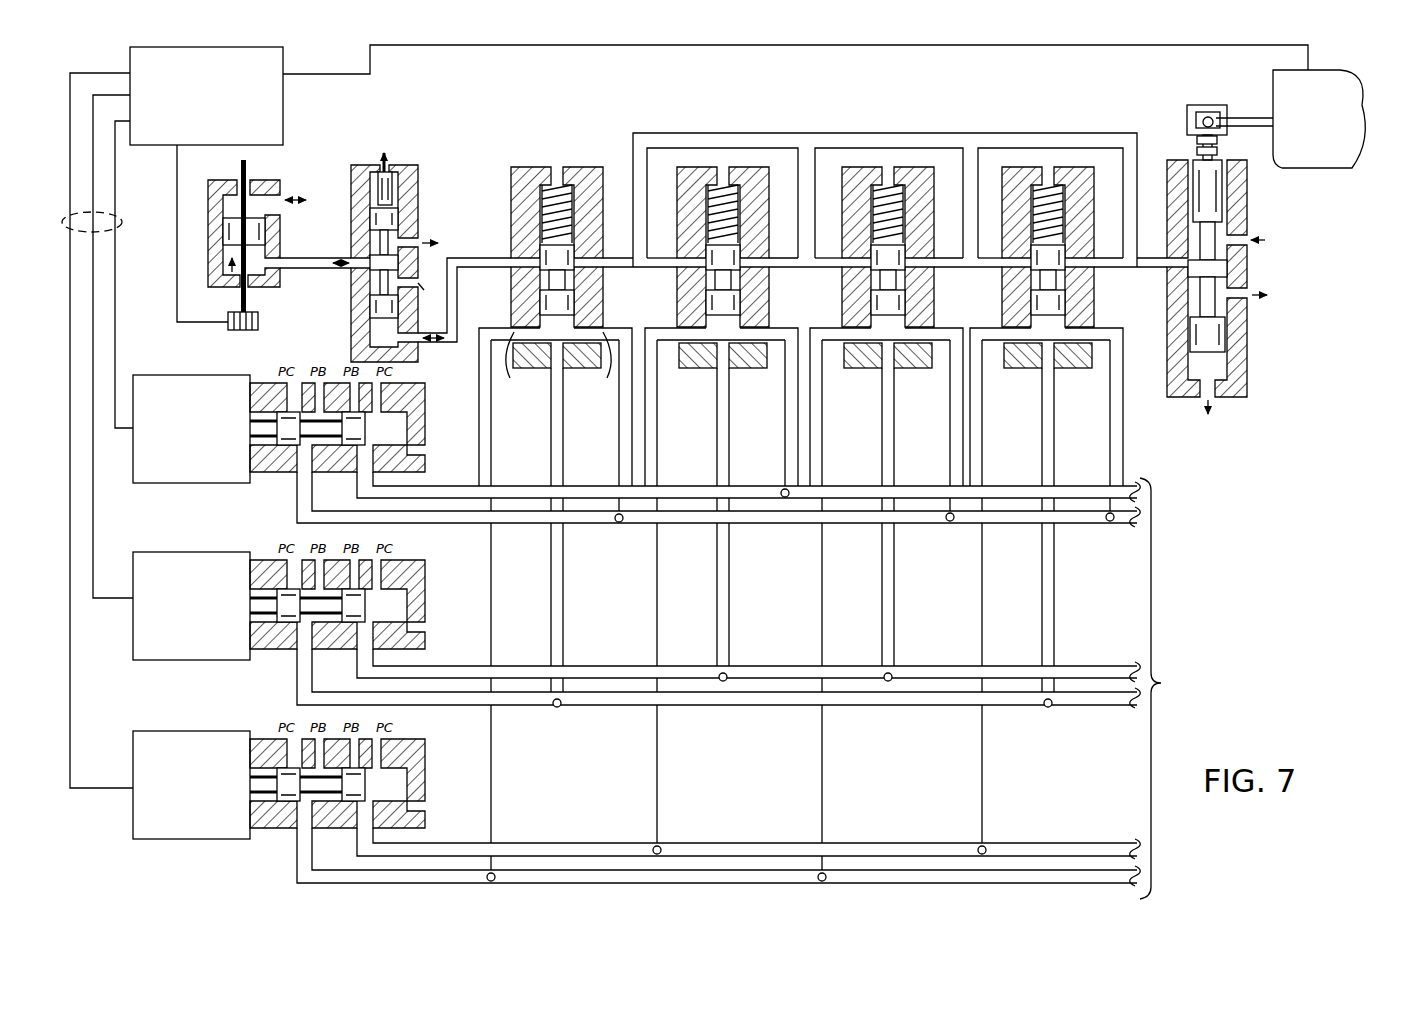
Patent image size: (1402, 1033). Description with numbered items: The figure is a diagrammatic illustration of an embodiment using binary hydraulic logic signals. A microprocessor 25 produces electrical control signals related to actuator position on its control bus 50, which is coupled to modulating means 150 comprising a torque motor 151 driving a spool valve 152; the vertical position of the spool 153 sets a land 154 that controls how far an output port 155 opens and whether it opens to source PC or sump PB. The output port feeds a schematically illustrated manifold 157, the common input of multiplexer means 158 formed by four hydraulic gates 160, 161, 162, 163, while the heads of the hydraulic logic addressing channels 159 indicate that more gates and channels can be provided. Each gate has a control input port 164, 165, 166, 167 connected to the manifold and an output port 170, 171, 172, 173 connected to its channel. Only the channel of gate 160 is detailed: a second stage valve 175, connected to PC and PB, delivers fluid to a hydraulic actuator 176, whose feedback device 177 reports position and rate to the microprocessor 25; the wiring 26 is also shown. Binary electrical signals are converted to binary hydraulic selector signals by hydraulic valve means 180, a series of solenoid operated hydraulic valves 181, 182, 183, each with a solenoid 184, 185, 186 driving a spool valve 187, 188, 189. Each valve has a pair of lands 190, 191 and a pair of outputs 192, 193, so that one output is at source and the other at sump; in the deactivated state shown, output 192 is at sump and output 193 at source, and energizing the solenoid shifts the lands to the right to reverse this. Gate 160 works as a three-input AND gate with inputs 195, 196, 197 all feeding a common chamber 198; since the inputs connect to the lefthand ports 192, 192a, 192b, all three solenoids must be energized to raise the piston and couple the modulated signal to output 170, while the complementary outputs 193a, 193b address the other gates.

The microprocessor 25 is at (284, 110).
The control signal lines 26 is at (112, 228).
The control bus 50 is at (568, 47).
The modulating means 150 is at (1245, 242).
The torque motor 151 is at (1308, 170).
The spool valve 152 is at (1250, 338).
The spool 153 is at (1188, 338).
The land 154 is at (1247, 267).
The output port 155 is at (1167, 283).
The manifold 157 is at (950, 133).
The multiplexer means 158 is at (780, 92).
The hydraulic logic addressing channels 159 is at (1170, 688).
The hydraulic gate 160 is at (552, 166).
The hydraulic gate 161 is at (680, 176).
The hydraulic gate 162 is at (846, 176).
The hydraulic gate 163 is at (1008, 176).
The control input port 164 is at (628, 268).
The control input port 165 is at (772, 268).
The control input port 166 is at (940, 268).
The control input port 167 is at (1098, 268).
The output port 170 is at (518, 258).
The output port 171 is at (678, 277).
The output port 172 is at (808, 266).
The output port 173 is at (972, 266).
The second stage valve 175 is at (393, 172).
The hydraulic actuator 176 is at (266, 185).
The feedback device 177 is at (228, 334).
The hydraulic valve means 180 is at (455, 549).
The solenoid operated hydraulic valve 181 is at (240, 493).
The solenoid operated hydraulic valve 182 is at (256, 673).
The solenoid operated hydraulic valve 183 is at (234, 856).
The solenoid 184 is at (152, 485).
The solenoid 185 is at (133, 634).
The solenoid 186 is at (138, 728).
The spool valve 187 is at (422, 390).
The spool valve 188 is at (425, 601).
The spool valve 189 is at (425, 749).
The land 190 is at (269, 348).
The land 191 is at (398, 427).
The output 192 is at (302, 478).
The lefthand port 192a is at (300, 656).
The lefthand port 192b is at (302, 832).
The output 193 is at (380, 484).
The output 193a is at (380, 675).
The output 193b is at (380, 854).
The input 195 is at (505, 368).
The input 196 is at (558, 372).
The input 197 is at (593, 368).
The common chamber 198 is at (543, 330).